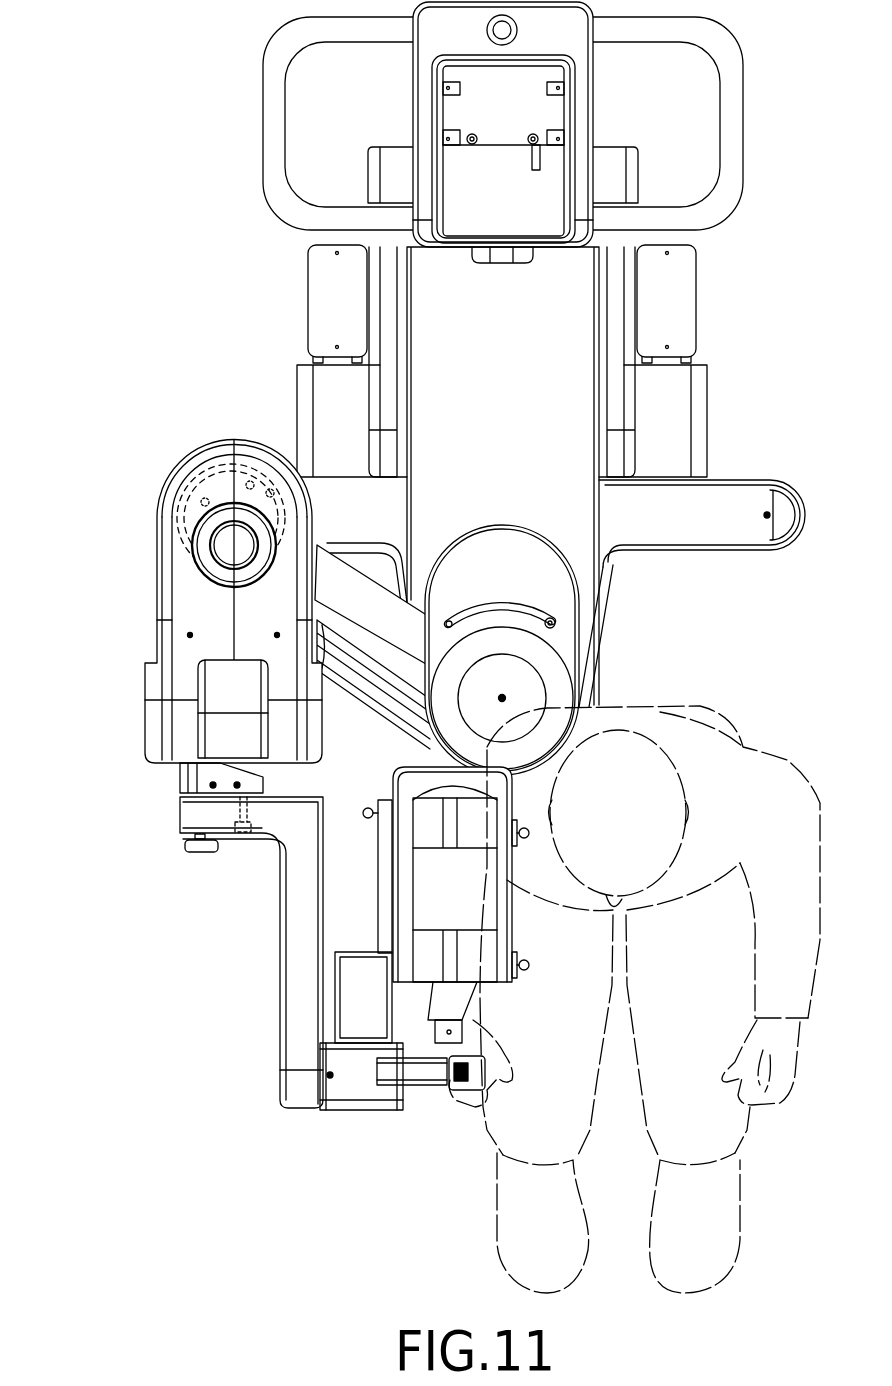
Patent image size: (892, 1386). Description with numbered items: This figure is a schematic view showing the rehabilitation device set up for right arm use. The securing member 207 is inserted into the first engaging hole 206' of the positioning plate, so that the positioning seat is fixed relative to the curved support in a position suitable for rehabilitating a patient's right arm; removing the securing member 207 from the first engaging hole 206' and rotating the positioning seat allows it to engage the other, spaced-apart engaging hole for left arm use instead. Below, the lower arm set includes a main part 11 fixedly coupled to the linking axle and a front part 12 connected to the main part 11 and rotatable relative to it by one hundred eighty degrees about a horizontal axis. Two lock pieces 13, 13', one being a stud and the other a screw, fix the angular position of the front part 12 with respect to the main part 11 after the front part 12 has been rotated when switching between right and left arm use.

The main part 11 is at (198, 777).
The front part 12 is at (298, 958).
The lock piece 13 is at (175, 887).
The lock piece 13' is at (246, 857).
The first engaging hole 206' is at (186, 602).
The securing member 207 is at (230, 563).